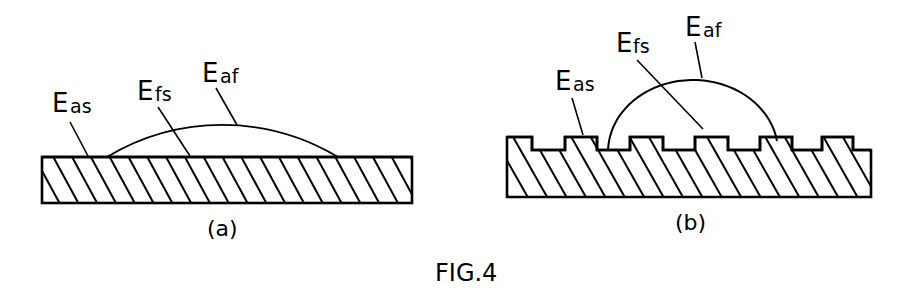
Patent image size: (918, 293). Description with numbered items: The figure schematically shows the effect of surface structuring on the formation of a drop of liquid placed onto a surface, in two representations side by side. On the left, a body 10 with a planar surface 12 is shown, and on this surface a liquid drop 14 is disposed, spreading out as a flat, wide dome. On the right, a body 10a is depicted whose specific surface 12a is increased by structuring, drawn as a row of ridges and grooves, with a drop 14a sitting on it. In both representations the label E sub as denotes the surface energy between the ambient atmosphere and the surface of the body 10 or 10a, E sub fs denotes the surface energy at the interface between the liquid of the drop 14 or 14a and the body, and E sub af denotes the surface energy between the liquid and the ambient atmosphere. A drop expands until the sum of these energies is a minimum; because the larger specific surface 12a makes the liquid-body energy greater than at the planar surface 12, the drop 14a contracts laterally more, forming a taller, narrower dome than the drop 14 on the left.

The body 10 is at (396, 173).
The planar surface 12 is at (368, 154).
The liquid drop 14 is at (290, 143).
The body 10a is at (858, 170).
The structured surface 12a is at (782, 137).
The liquid drop 14a is at (745, 110).